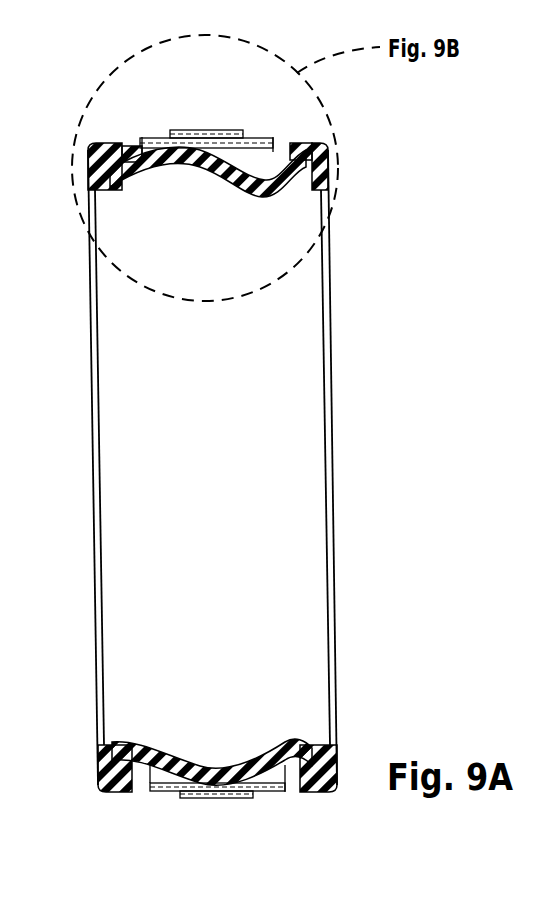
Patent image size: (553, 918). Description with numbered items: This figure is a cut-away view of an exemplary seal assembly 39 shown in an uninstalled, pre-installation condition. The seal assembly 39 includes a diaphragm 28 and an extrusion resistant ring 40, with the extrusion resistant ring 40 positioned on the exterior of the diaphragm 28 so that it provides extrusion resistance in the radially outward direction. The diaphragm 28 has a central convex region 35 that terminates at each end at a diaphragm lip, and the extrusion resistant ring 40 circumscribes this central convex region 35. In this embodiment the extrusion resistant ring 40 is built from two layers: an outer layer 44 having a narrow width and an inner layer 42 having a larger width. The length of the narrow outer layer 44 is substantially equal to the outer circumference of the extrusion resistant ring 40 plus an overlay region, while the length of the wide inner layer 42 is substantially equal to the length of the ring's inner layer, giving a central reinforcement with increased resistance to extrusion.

The seal assembly 39 is at (348, 470).
The diaphragm 28 is at (305, 170).
The central convex region 35 is at (158, 158).
The extrusion resistant ring 40 is at (265, 155).
The inner layer 42 is at (255, 132).
The outer layer 44 is at (206, 130).